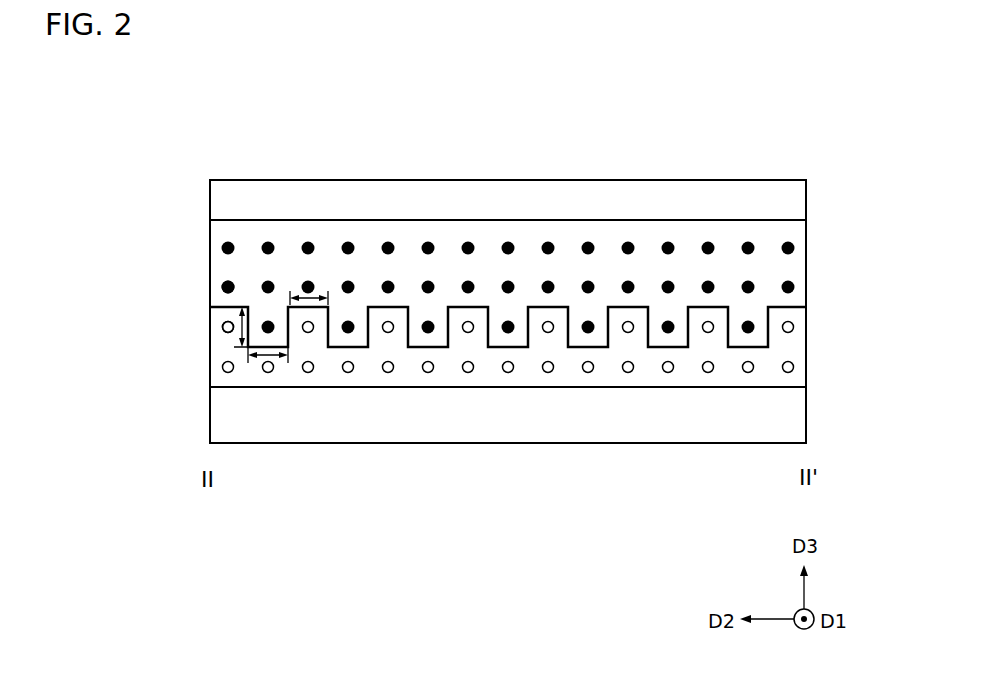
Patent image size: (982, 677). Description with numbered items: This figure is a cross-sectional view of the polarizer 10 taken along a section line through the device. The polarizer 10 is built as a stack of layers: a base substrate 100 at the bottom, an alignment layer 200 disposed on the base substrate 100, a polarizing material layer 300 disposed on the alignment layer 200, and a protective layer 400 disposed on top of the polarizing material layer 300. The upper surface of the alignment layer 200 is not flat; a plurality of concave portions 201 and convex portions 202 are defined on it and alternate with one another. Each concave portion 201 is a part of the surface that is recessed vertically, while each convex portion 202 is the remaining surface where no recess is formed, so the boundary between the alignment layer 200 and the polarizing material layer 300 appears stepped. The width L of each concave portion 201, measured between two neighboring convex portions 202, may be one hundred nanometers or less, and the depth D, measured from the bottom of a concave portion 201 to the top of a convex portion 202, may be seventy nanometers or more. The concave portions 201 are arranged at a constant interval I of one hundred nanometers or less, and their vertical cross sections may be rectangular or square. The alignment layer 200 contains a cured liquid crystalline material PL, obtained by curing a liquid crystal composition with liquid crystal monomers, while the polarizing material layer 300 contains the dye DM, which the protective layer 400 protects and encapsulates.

The polarizer 10 is at (717, 149).
The base substrate 100 is at (795, 416).
The alignment layer 200 is at (795, 377).
The concave portion 201 is at (758, 345).
The convex portion 202 is at (717, 307).
The polarizing material layer 300 is at (795, 265).
The protective layer 400 is at (795, 203).
The dye DM is at (226, 283).
The cured liquid crystalline material PL is at (223, 326).
The depth of concave portion D is at (223, 313).
The width of concave portion L is at (267, 358).
The interval between concave portions I is at (308, 300).